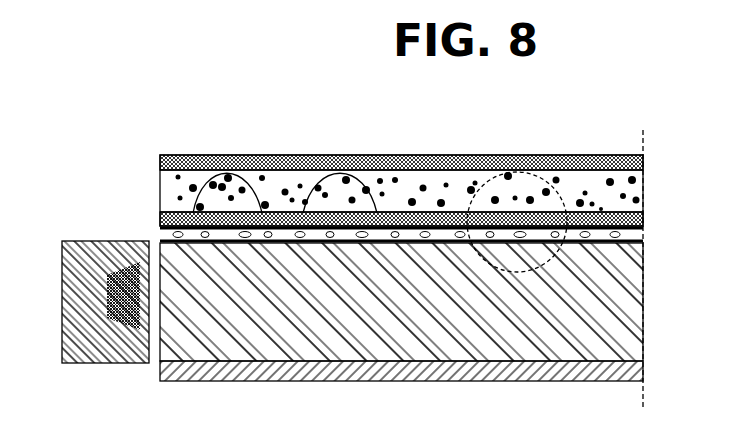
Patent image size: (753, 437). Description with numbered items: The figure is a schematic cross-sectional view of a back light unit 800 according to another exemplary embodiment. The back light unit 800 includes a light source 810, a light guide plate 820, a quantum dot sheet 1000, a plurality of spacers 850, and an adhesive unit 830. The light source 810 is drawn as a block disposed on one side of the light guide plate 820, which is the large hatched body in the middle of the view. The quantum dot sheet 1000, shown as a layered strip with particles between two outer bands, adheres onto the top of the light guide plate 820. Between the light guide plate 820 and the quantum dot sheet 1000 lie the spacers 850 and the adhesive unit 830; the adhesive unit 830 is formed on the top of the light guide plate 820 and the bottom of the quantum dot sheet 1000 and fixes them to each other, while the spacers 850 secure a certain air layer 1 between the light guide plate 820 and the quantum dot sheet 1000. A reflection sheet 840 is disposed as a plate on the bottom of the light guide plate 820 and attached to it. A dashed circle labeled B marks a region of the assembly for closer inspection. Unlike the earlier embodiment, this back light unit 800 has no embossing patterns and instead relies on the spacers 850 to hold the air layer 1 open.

The back light unit 800 is at (92, 116).
The quantum dot sheet 1000 is at (155, 155).
The air layer 1 is at (222, 182).
The spacer 850 is at (353, 172).
The detail region B is at (513, 172).
The light source 810 is at (80, 241).
The adhesive unit 830 is at (645, 236).
The light guide plate 820 is at (628, 300).
The reflection sheet 840 is at (645, 372).